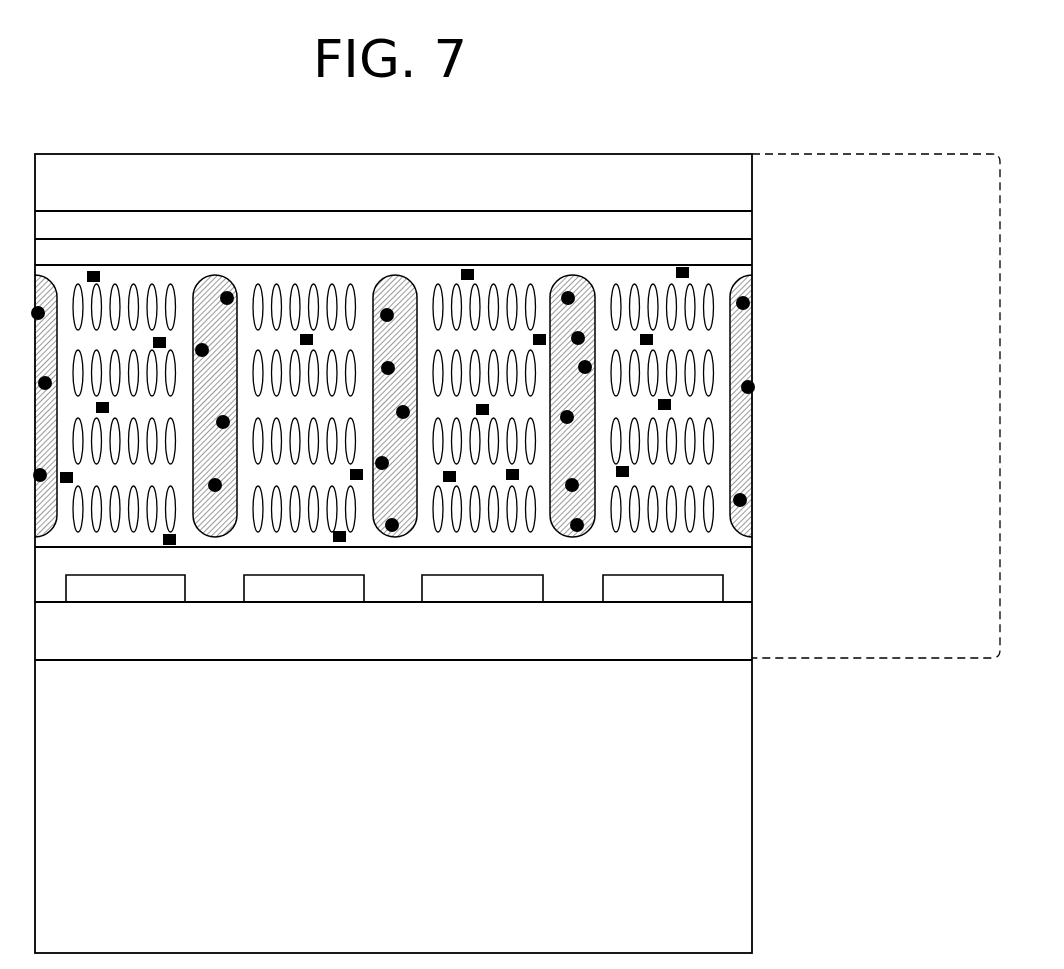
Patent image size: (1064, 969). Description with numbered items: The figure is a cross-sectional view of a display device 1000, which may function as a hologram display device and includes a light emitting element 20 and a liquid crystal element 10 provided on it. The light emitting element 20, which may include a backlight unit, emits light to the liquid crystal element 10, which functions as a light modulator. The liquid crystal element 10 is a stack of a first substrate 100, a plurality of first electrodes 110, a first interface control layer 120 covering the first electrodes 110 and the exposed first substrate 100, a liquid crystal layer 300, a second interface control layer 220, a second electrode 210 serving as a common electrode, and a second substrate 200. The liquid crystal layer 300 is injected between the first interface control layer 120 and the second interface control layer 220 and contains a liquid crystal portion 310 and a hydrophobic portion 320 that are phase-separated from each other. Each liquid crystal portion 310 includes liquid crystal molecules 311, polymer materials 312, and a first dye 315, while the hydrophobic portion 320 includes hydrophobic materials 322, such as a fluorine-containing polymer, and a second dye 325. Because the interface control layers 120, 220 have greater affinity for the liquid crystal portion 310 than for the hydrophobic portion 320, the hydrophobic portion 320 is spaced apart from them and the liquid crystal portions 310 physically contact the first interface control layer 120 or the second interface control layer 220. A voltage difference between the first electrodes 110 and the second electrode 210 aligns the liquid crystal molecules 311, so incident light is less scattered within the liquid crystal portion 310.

The display device 1000 is at (888, 76).
The liquid crystal element 10 is at (997, 390).
The light emitting element 20 is at (740, 810).
The first substrate 100 is at (740, 628).
The first electrode 110 is at (707, 590).
The first interface control layer 120 is at (740, 563).
The second substrate 200 is at (740, 183).
The second electrode 210 is at (740, 222).
The second interface control layer 220 is at (740, 250).
The liquid crystal layer 300 is at (489, 406).
The liquid crystal portion 310 is at (468, 406).
The liquid crystal molecules 311 is at (713, 373).
The polymer materials 312 is at (718, 405).
The first dye 315 is at (655, 340).
The hydrophobic portion 320 is at (457, 406).
The hydrophobic materials 322 is at (746, 457).
The second dye 325 is at (748, 500).